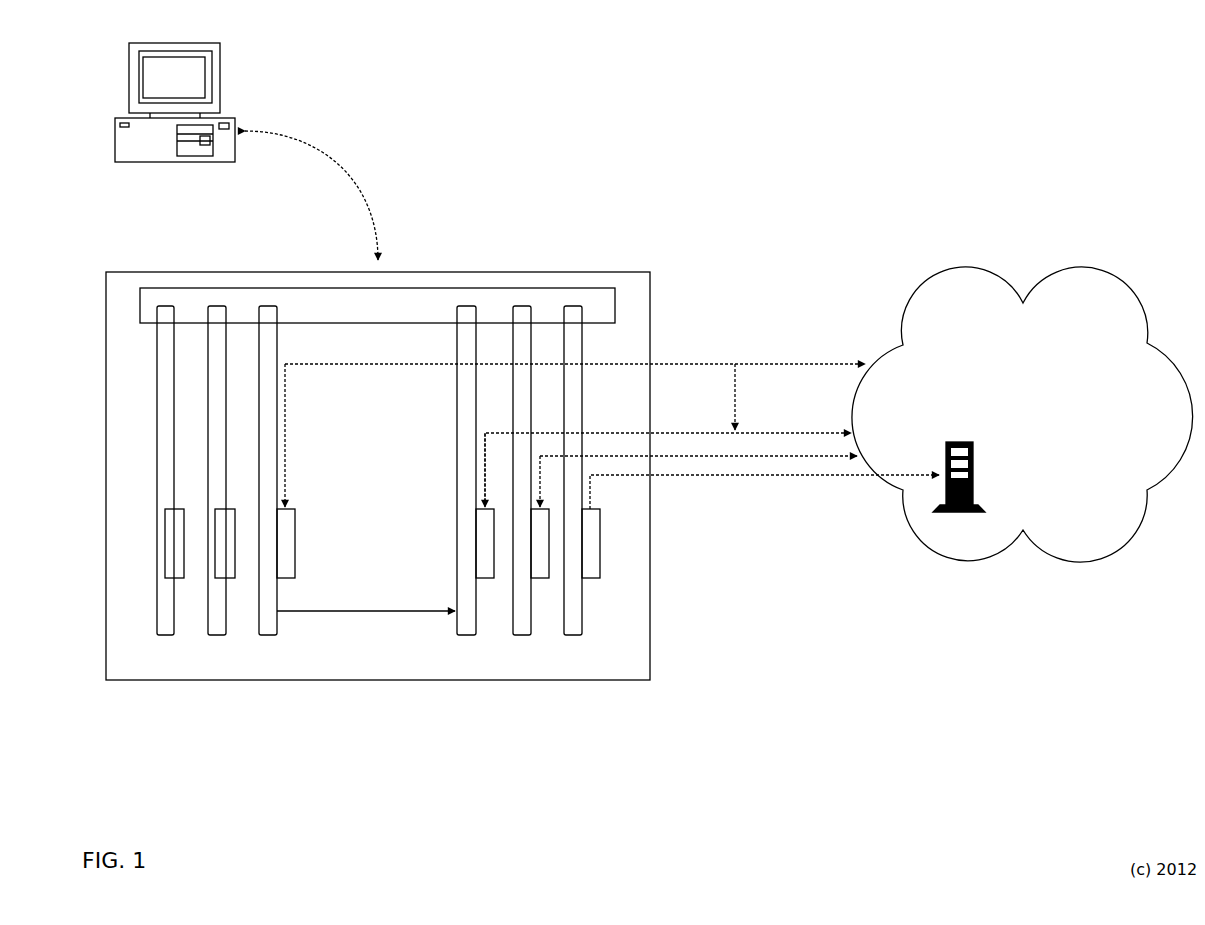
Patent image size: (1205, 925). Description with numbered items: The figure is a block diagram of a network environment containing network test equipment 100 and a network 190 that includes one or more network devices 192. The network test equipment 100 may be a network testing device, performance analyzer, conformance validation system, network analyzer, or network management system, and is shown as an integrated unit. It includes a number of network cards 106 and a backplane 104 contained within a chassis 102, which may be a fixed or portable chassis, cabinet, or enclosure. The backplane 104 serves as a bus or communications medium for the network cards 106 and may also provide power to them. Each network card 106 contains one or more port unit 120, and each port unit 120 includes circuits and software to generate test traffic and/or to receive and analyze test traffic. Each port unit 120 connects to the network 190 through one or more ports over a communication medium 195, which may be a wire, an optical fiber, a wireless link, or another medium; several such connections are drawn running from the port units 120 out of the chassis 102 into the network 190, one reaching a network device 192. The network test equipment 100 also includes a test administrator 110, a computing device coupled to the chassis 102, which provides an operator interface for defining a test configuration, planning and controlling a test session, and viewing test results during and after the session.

The network test equipment 100 is at (545, 66).
The chassis 102 is at (485, 270).
The backplane 104 is at (598, 280).
The network cards 106 is at (594, 637).
The test administrator 110 is at (235, 151).
The port unit 120 is at (590, 578).
The network 190 is at (1022, 414).
The network device 192 is at (958, 510).
The communication medium 195 is at (695, 476).